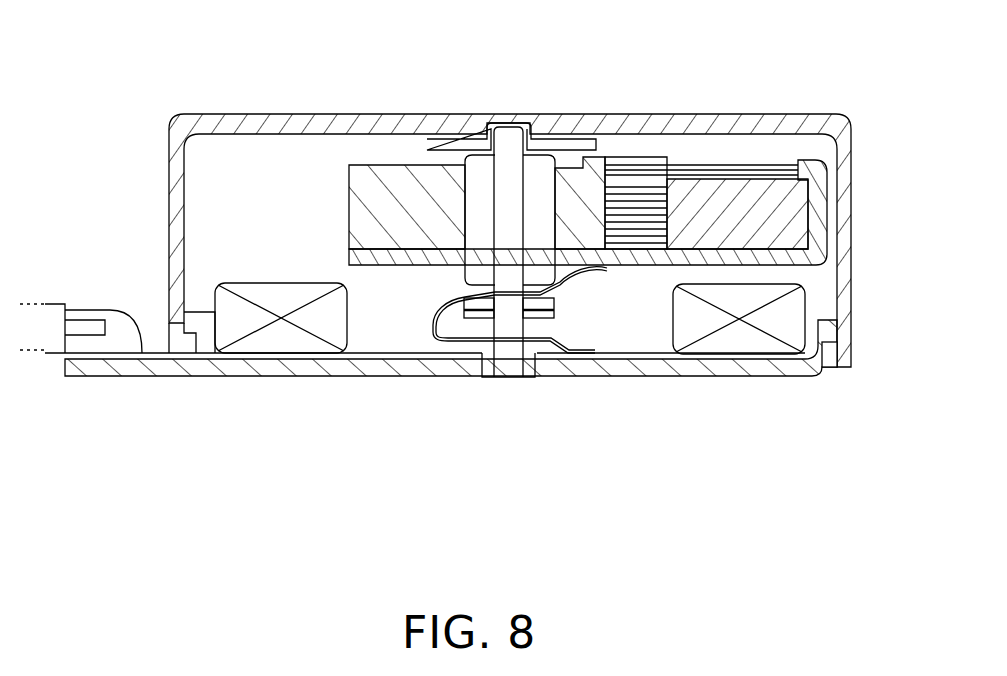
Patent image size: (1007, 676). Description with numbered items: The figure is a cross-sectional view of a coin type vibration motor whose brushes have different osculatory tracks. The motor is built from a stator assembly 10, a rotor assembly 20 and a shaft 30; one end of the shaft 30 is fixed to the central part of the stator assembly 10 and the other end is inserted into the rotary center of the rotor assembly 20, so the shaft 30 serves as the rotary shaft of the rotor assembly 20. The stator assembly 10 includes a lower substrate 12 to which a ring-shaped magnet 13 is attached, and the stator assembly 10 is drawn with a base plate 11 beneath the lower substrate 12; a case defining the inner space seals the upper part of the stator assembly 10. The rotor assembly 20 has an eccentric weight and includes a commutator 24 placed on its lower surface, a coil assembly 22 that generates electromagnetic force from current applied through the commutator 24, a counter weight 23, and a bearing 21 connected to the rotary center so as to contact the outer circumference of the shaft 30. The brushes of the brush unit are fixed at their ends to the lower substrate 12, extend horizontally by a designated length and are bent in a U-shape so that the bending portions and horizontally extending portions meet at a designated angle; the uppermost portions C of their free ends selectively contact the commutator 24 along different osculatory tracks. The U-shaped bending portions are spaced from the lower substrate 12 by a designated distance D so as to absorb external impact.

The stator assembly 10 is at (670, 405).
The base plate 11 is at (610, 378).
The lower substrate 12 is at (566, 372).
The magnet 13 is at (747, 348).
The rotor assembly 20 is at (834, 202).
The bearing 21 is at (476, 160).
The coil assembly 22 is at (634, 176).
The counter weight 23 is at (774, 188).
The commutator 24 is at (349, 251).
The shaft 30 is at (512, 141).
The uppermost portions of the brushes C is at (588, 262).
The designated distance D is at (435, 340).